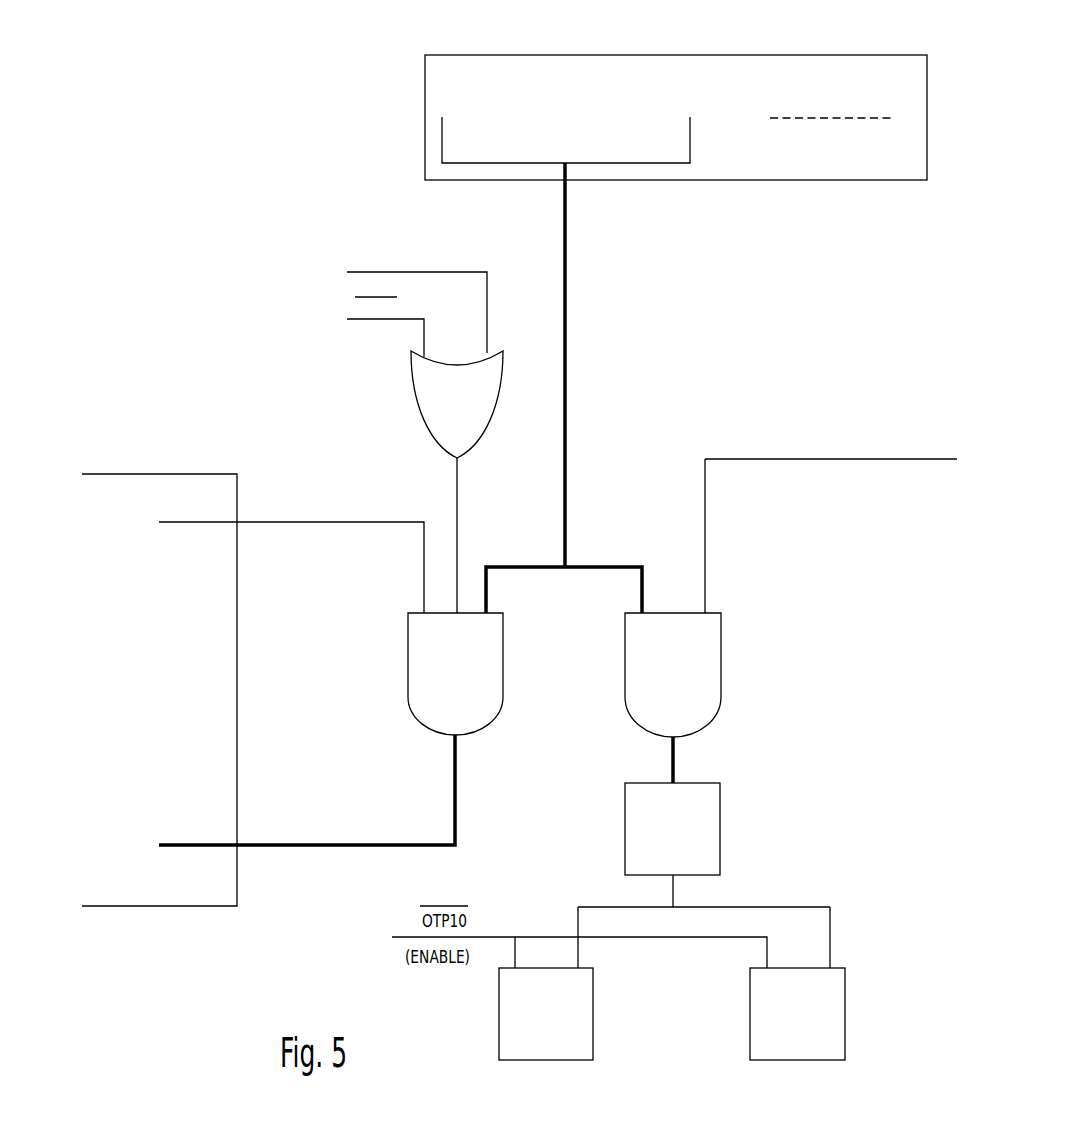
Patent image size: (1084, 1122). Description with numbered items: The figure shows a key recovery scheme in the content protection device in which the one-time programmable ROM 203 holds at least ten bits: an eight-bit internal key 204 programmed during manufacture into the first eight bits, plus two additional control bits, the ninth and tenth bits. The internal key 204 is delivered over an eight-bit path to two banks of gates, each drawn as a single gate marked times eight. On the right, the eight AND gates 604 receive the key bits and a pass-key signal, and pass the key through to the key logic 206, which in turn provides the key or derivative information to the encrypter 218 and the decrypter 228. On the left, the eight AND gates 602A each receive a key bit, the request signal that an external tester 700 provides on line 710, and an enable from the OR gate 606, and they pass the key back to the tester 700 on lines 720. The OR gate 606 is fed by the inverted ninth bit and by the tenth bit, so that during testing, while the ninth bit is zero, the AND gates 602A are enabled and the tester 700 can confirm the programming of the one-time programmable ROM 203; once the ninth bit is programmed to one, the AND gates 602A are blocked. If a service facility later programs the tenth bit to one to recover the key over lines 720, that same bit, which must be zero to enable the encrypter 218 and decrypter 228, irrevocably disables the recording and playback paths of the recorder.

The one-time programmable ROM 203 is at (676, 99).
The internal key 204 is at (598, 388).
The OR gate 606 is at (425, 432).
The AND gates 602A is at (408, 659).
The AND gates 604 is at (721, 631).
The key logic 206 is at (743, 695).
The encrypter 218 is at (546, 1014).
The decrypter 228 is at (797, 1014).
The tester 700 is at (159, 690).
The line 710 is at (291, 555).
The lines 720 is at (307, 790).